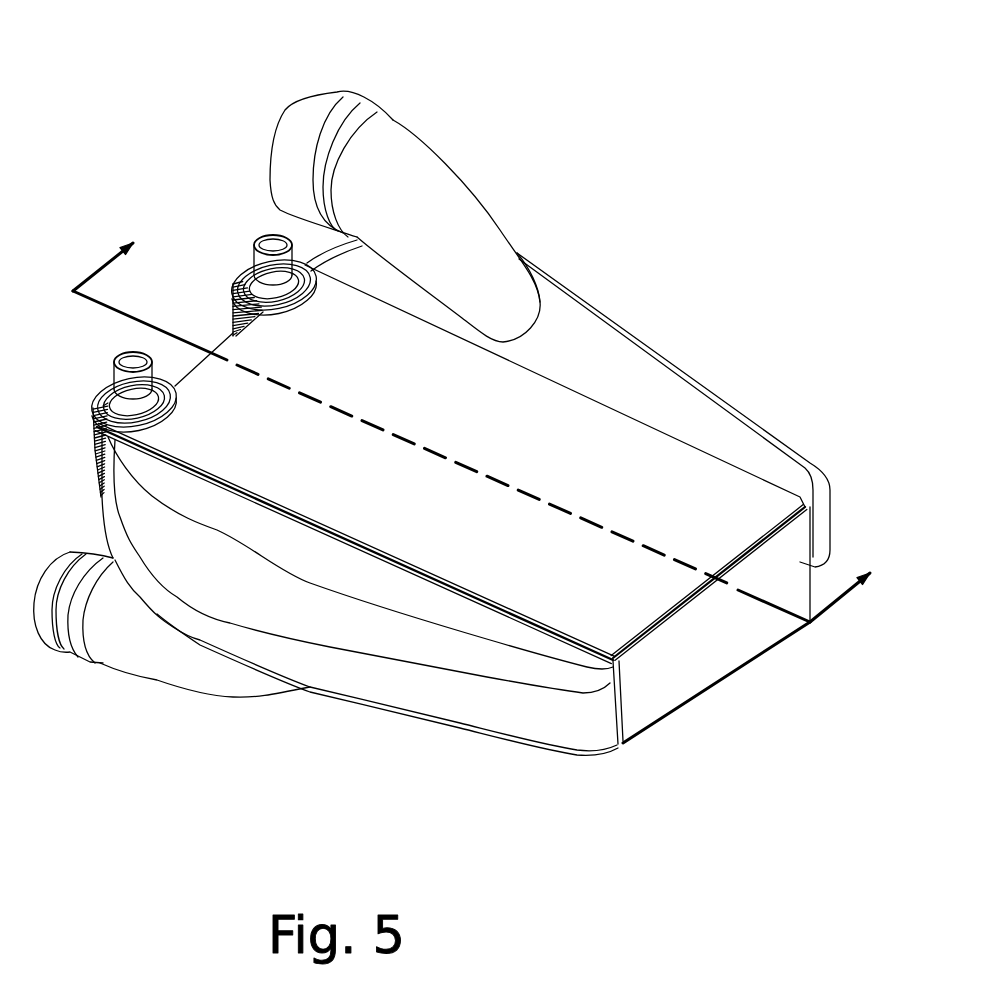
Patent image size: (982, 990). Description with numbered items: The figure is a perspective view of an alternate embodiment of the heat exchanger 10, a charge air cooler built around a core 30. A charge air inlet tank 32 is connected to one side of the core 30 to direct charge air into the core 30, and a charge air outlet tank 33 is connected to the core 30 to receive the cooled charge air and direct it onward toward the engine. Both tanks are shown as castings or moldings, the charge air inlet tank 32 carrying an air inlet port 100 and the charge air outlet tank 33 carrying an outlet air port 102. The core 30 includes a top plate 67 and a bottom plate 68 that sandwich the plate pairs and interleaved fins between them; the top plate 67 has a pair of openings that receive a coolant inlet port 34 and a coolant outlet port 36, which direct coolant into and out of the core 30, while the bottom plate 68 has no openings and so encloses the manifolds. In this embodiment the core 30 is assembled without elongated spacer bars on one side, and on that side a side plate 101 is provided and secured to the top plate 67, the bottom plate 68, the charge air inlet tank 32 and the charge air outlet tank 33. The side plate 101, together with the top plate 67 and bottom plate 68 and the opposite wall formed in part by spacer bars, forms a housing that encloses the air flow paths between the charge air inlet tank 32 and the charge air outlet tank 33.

The heat exchanger 10 is at (612, 227).
The core 30 is at (227, 340).
The charge air inlet tank 32 is at (410, 688).
The charge air outlet tank 33 is at (625, 358).
The coolant inlet port 34 is at (257, 261).
The coolant outlet port 36 is at (123, 381).
The top plate 67 is at (700, 500).
The bottom plate 68 is at (620, 746).
The air inlet port 100 is at (43, 627).
The side plate 101 is at (673, 682).
The outlet air port 102 is at (337, 103).